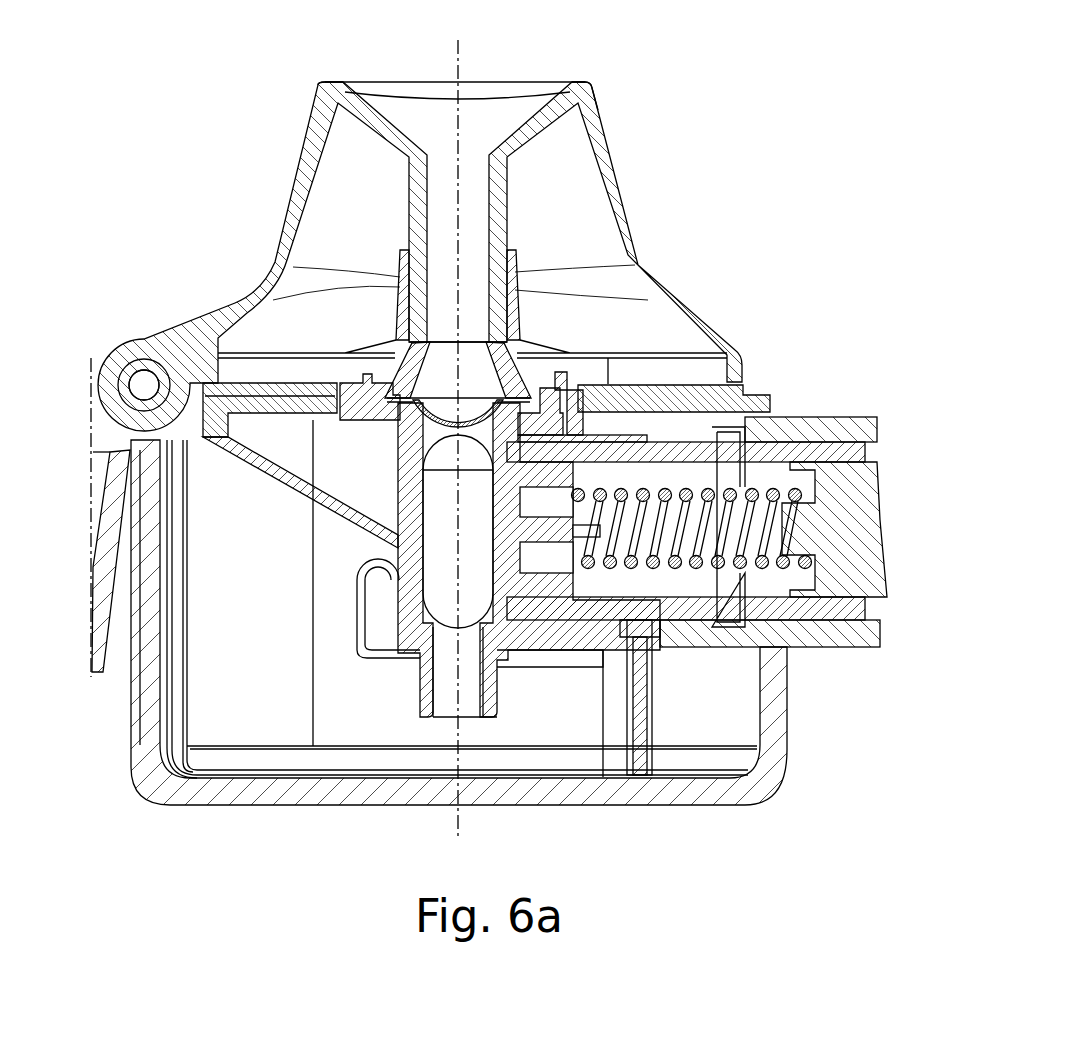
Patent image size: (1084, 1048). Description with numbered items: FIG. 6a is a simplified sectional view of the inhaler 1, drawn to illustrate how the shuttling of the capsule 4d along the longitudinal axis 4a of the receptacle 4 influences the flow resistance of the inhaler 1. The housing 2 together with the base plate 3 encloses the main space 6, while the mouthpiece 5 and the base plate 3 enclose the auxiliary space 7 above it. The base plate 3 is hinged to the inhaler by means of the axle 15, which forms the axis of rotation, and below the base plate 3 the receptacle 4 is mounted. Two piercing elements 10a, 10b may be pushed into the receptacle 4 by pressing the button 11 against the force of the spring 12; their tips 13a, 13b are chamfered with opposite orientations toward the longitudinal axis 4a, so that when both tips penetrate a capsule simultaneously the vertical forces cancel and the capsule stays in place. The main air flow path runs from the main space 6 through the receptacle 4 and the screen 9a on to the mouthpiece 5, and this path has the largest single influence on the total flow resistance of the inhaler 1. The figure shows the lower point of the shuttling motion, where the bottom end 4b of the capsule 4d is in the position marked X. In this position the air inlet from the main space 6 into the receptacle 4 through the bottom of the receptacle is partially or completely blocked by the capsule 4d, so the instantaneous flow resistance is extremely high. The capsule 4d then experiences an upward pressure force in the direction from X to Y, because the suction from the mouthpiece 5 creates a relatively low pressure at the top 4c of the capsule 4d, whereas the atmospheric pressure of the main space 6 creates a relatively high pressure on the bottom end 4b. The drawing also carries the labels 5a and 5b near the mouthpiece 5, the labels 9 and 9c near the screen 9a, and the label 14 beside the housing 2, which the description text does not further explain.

The inhaler 1 is at (750, 197).
The housing 2 is at (770, 742).
The base plate 3 is at (285, 393).
The receptacle 4 is at (425, 708).
The longitudinal axis 4a is at (460, 826).
The bottom end of the capsule 4b is at (440, 553).
The top of the capsule 4c is at (400, 535).
The capsule 4d is at (397, 577).
The mouthpiece 5 is at (494, 278).
The sleeve 5a is at (518, 266).
The cap rim 5b is at (538, 118).
The main space 6 is at (226, 700).
The auxiliary space 7 is at (558, 186).
The valve 9 is at (565, 400).
The screen 9a is at (395, 425).
The seal 9c is at (270, 390).
The first piercing element 10a is at (822, 442).
The second piercing element 10b is at (845, 612).
The button 11 is at (847, 533).
The spring 12 is at (731, 568).
The first tip 13a is at (503, 413).
The second tip 13b is at (538, 612).
The lever 14 is at (102, 643).
The axle 15 is at (143, 372).
The position X is at (568, 612).
The direction Y is at (488, 420).